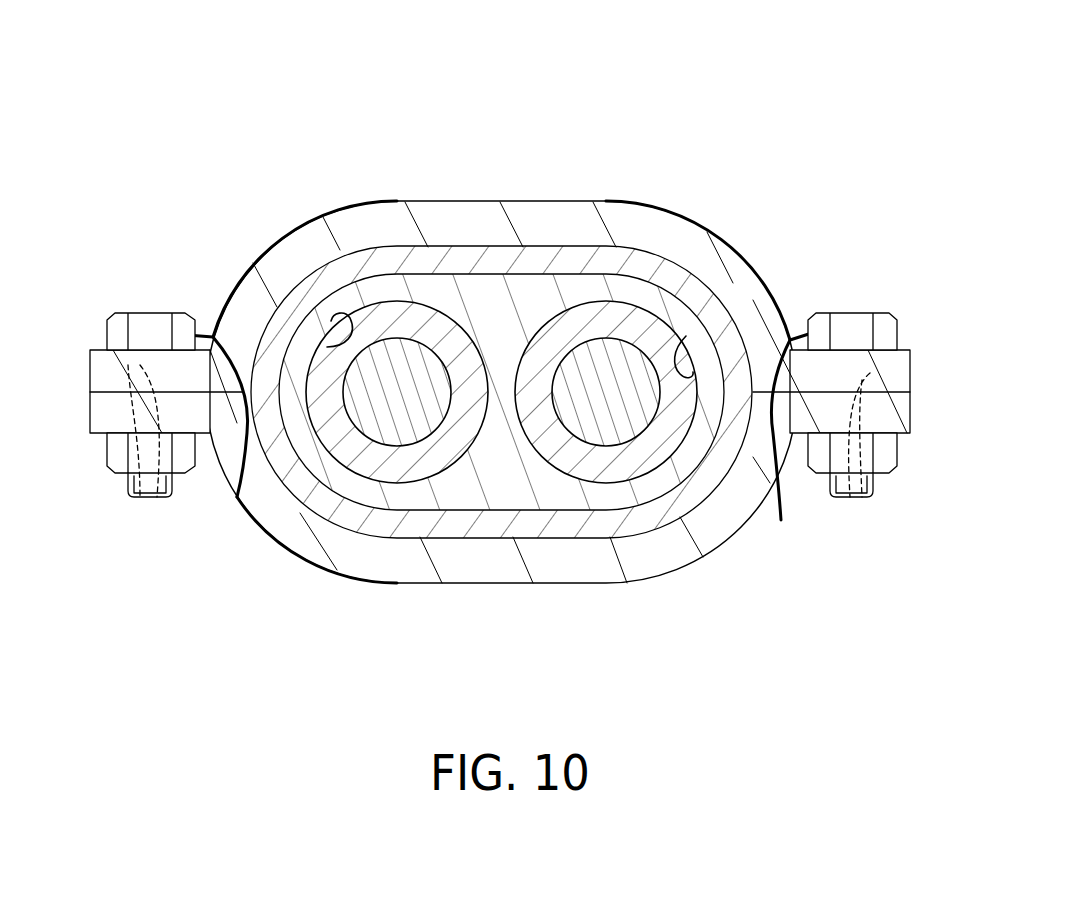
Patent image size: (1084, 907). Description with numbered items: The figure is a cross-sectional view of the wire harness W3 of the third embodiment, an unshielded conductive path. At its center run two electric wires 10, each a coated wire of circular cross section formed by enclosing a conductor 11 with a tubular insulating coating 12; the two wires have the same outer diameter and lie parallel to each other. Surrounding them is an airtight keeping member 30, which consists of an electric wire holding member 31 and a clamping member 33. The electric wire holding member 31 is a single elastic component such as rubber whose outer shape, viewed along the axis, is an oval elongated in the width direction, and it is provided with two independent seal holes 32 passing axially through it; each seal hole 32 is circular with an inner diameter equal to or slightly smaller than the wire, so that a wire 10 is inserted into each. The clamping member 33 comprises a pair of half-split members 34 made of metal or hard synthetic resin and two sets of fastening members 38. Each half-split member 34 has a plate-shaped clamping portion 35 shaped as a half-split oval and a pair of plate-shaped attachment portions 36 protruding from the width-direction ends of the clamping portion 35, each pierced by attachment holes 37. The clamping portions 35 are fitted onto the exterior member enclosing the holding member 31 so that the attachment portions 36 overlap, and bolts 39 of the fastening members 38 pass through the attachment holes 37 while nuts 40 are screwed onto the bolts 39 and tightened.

The wire harness W3 is at (724, 100).
The electric wire 10 is at (347, 657).
The conductor 11 is at (398, 410).
The insulating coating 12 is at (428, 462).
The airtight keeping member 30 is at (407, 67).
The electric wire holding member 31 is at (458, 288).
The seal hole 32 is at (327, 347).
The clamping member 33 is at (356, 172).
The half-split member 34 is at (540, 200).
The plate-shaped clamping portion 35 is at (625, 218).
The plate-shaped attachment portion 36 is at (95, 415).
The attachment hole 37 is at (152, 497).
The fastening member 38 is at (235, 665).
The bolt 39 is at (237, 497).
The nut 40 is at (183, 460).